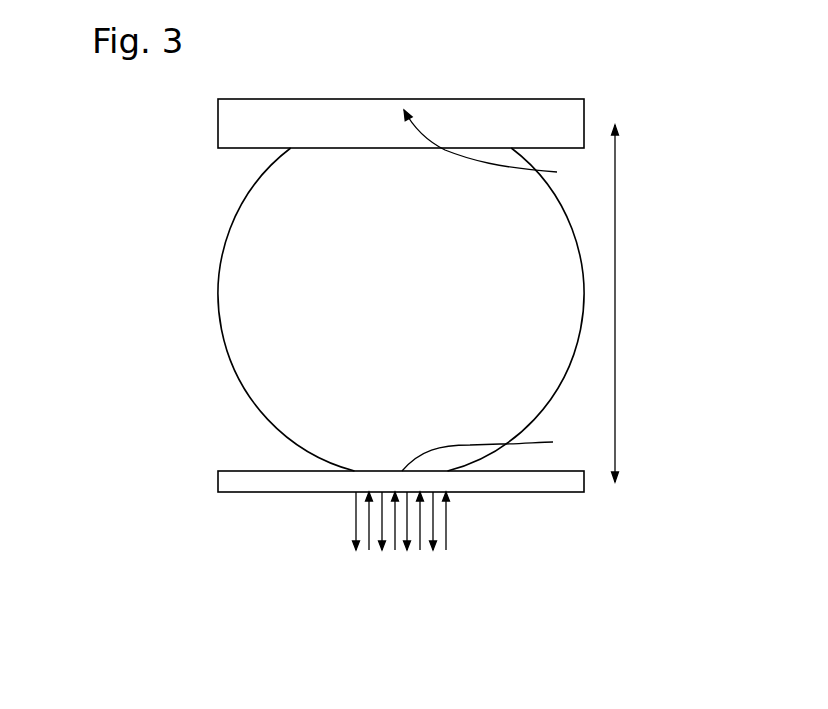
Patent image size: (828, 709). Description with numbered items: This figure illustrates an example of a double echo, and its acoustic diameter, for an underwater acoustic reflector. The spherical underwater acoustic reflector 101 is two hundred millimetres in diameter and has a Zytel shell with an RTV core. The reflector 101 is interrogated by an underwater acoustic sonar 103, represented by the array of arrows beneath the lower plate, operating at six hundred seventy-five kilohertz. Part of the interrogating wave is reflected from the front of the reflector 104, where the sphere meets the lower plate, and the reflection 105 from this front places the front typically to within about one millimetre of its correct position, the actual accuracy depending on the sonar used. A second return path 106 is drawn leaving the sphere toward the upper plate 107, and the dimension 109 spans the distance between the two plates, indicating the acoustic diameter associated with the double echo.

The spherical underwater acoustic reflector 101 is at (420, 310).
The underwater acoustic sonar 103 is at (425, 555).
The front of the reflector 104 is at (497, 449).
The reflection from the front of the reflector 105 is at (240, 492).
The reflected light direction 106 is at (499, 147).
The upper plate 107 is at (277, 99).
The distance between plates 109 is at (616, 292).